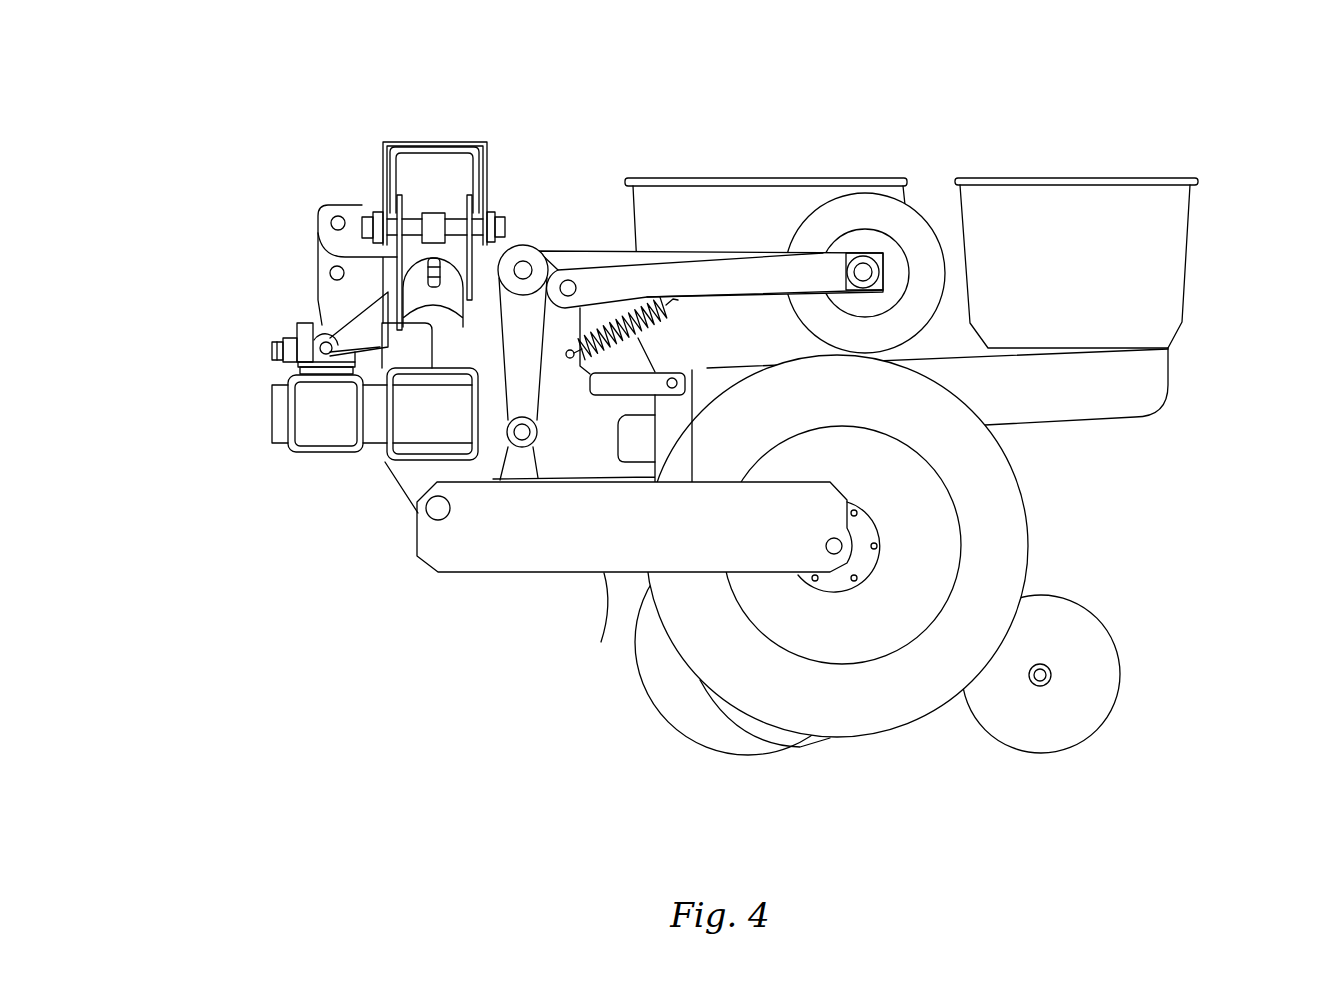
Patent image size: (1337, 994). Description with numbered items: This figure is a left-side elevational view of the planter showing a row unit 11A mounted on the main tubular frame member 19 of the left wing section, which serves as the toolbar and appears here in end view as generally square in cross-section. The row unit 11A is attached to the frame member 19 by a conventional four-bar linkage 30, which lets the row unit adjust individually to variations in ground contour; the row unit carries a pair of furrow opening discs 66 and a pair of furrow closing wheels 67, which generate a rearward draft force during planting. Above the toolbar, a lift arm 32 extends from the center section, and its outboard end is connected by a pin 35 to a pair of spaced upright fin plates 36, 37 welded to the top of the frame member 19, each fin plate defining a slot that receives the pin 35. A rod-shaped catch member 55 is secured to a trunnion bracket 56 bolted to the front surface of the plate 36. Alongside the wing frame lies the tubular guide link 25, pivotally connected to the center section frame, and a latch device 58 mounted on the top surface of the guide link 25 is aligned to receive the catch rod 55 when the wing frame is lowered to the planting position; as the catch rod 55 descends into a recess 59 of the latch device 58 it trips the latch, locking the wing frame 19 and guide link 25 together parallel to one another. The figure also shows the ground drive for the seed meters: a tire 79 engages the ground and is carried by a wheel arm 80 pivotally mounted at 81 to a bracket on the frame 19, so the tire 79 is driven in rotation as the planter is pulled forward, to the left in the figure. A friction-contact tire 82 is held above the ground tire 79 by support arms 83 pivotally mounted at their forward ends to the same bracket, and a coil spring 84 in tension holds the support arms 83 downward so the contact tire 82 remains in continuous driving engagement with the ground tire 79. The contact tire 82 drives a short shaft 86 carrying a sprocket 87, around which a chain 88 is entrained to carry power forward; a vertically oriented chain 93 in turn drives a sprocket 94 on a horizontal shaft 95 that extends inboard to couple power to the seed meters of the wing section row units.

The row unit 11A is at (1165, 180).
The main tubular frame member 19 is at (384, 461).
The guide link 25 is at (285, 448).
The four-bar linkage 30 is at (615, 400).
The lift arm 32 is at (430, 140).
The pin 35 is at (362, 222).
The fin plate 36 is at (320, 233).
The fin plate 37 is at (478, 258).
The catch member 55 is at (292, 363).
The trunnion bracket 56 is at (335, 262).
The latch device 58 is at (297, 325).
The recess 59 is at (320, 322).
The furrow opening discs 66 is at (673, 707).
The furrow closing wheels 67 is at (1062, 738).
The tire 79 is at (873, 717).
The wheel arm 80 is at (607, 577).
The pivot 81 is at (431, 518).
The friction-contact tire 82 is at (917, 203).
The support arms 83 is at (743, 272).
The coil spring 84 is at (652, 300).
The short shaft 86 is at (862, 255).
The sprocket 87 is at (883, 288).
The chain 88 is at (590, 250).
The chain 93 is at (497, 390).
The sprocket 94 is at (512, 462).
The horizontal shaft 95 is at (530, 445).